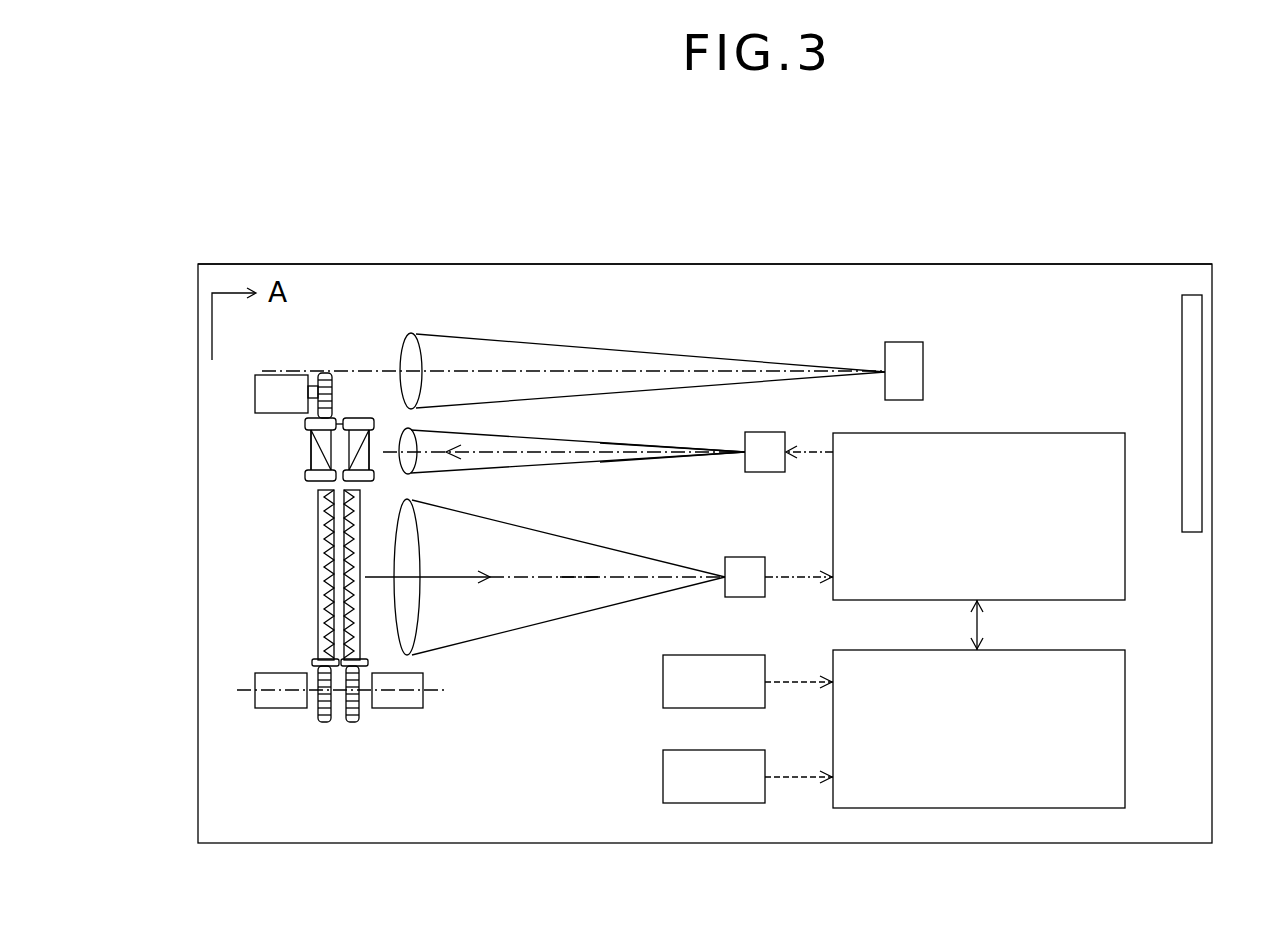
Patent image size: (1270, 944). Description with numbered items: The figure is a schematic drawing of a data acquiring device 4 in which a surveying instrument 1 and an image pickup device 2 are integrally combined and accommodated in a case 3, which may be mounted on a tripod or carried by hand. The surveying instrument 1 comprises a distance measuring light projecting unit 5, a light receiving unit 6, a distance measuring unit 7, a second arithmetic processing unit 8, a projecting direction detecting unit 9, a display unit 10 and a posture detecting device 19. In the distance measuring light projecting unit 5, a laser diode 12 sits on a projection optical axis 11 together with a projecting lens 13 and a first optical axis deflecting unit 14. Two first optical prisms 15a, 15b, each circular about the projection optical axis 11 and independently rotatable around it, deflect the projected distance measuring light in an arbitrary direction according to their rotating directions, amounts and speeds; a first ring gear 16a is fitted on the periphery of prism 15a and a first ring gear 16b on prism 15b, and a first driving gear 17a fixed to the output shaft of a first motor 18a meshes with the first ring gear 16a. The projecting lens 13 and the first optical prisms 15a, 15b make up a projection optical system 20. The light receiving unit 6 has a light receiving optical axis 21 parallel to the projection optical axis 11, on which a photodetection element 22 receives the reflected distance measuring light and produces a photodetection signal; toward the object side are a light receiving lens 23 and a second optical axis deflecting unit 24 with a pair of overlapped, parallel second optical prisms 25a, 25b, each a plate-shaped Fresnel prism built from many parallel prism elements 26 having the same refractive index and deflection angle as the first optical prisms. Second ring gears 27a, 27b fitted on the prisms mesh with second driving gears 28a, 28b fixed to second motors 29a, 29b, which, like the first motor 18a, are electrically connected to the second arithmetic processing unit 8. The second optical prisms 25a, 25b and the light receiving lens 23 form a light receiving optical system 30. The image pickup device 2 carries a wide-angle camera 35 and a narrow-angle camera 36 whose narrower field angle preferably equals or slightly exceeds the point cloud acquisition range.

The surveying instrument 1 is at (990, 417).
The image pickup device 2 is at (928, 340).
The case 3 is at (933, 263).
The data acquiring device 4 is at (770, 262).
The distance measuring light projecting unit 5 is at (650, 475).
The light receiving unit 6 is at (523, 647).
The distance measuring unit 7 is at (1077, 432).
The second arithmetic processing unit 8 is at (1125, 697).
The projecting direction detecting unit 9 is at (708, 655).
The display unit 10 is at (1180, 328).
The projection optical axis 11 is at (553, 450).
The laser diode 12 is at (767, 432).
The projecting lens 13 is at (411, 429).
The first optical axis deflecting unit 14 is at (345, 414).
The first optical prism 15a is at (307, 448).
The first optical prism 15b is at (376, 470).
The first ring gear 16a is at (304, 422).
The first ring gear 16b is at (367, 414).
The first driving gear 17a is at (323, 373).
The first motor 18a is at (262, 374).
The posture detecting device 19 is at (743, 752).
The projection optical system 20 is at (712, 436).
The light receiving optical axis 21 is at (570, 578).
The photodetection element 22 is at (748, 557).
The light receiving lens 23 is at (422, 565).
The second optical axis deflecting unit 24 is at (300, 532).
The second optical prism 25a is at (318, 598).
The second optical prism 25b is at (360, 633).
The prism element 26 is at (318, 568).
The second ring gear 27a is at (317, 661).
The second ring gear 27b is at (372, 668).
The second driving gear 28a is at (322, 730).
The second driving gear 28b is at (353, 730).
The second motor 29a is at (285, 710).
The second motor 29b is at (407, 712).
The light receiving optical system 30 is at (640, 538).
The wide-angle camera 35 is at (560, 332).
The narrow-angle camera 36 is at (560, 332).